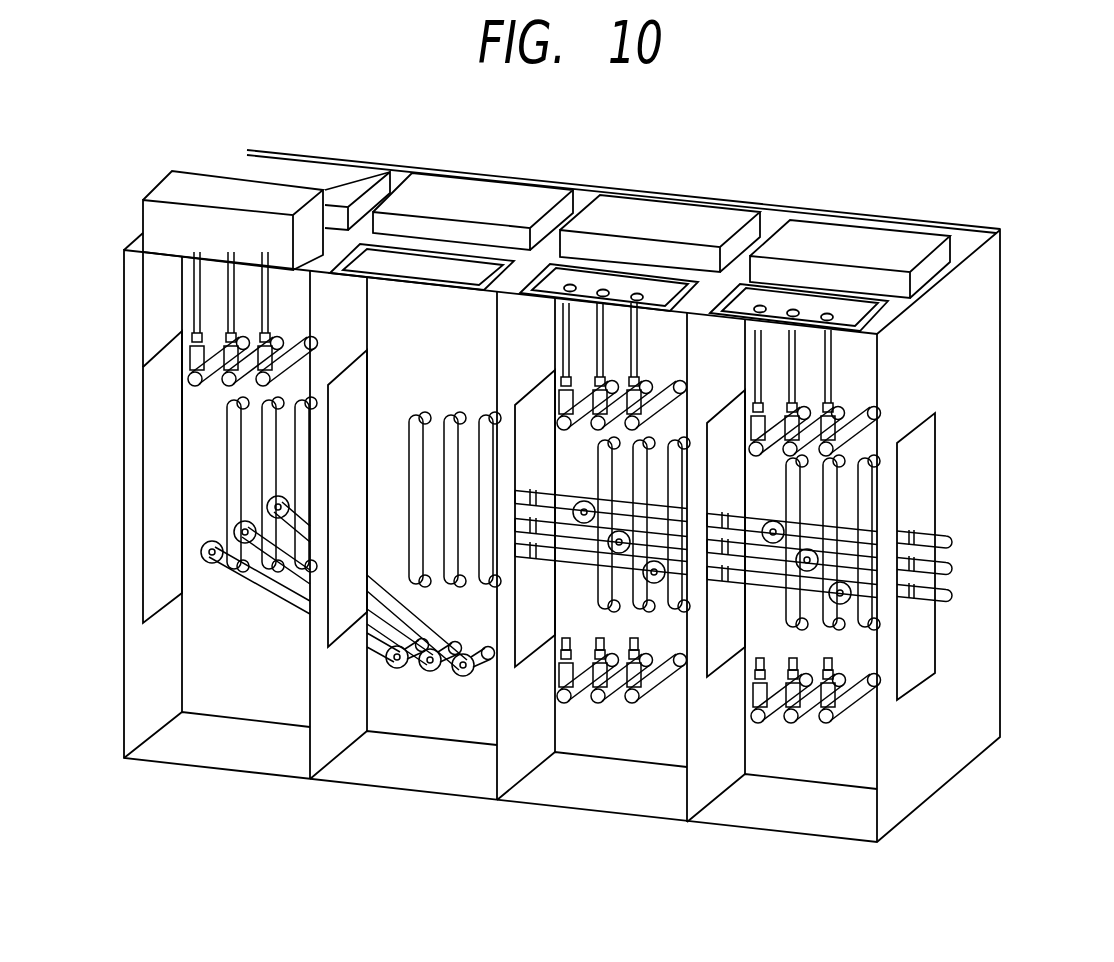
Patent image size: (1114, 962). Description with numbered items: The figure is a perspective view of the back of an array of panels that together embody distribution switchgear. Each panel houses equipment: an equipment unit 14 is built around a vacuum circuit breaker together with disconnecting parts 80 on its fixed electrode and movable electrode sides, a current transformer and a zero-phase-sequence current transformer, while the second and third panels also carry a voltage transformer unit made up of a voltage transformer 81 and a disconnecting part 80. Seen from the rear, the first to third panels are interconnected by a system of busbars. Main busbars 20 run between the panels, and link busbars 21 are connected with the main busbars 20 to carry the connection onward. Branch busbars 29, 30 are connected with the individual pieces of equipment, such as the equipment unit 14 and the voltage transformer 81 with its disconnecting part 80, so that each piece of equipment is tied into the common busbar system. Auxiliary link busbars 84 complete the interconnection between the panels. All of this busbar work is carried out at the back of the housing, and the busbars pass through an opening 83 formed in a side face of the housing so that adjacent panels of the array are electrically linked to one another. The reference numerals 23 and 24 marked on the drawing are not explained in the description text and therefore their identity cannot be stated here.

The equipment unit 14 is at (980, 285).
The main busbars 20 is at (942, 535).
The link busbars 21 is at (415, 447).
The valve rods 23 is at (187, 293).
The valves 24 is at (643, 348).
The branch busbars 29 is at (303, 350).
The branch busbars 30 is at (490, 677).
The disconnecting part 80 is at (283, 302).
The voltage transformer 81 is at (452, 320).
The opening 83 is at (932, 447).
The auxiliary link busbars 84 is at (280, 588).